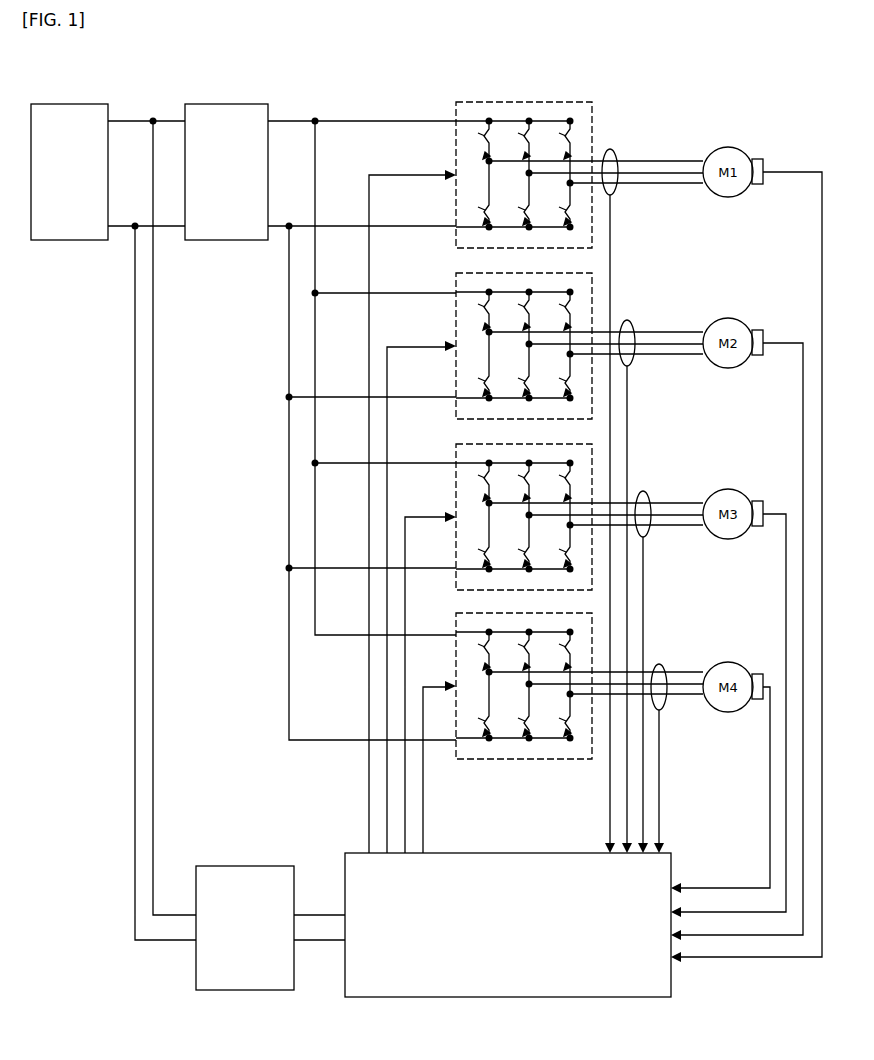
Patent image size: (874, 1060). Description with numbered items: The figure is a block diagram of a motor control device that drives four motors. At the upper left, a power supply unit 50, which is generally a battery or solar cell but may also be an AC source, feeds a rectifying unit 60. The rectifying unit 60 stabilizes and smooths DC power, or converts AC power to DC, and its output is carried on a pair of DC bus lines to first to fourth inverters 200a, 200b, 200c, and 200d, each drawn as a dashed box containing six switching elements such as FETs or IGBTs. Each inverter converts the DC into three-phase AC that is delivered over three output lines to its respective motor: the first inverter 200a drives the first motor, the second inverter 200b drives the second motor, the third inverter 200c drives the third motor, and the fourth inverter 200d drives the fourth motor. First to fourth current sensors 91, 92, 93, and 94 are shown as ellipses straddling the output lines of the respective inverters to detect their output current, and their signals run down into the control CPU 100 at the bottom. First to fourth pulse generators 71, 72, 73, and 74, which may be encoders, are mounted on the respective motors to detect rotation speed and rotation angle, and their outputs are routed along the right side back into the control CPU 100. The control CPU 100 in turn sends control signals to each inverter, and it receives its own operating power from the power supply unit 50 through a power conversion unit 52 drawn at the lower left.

The power supply unit 50 is at (69, 172).
The rectifying unit 60 is at (226, 172).
The power conversion unit 52 is at (245, 928).
The control CPU 100 is at (508, 925).
The first inverter 200a is at (510, 102).
The second inverter 200b is at (456, 273).
The third inverter 200c is at (467, 444).
The fourth inverter 200d is at (482, 613).
The first current sensor 91 is at (610, 149).
The second current sensor 92 is at (627, 320).
The third current sensor 93 is at (643, 491).
The fourth current sensor 94 is at (659, 664).
The first pulse generator 71 is at (757, 159).
The second pulse generator 72 is at (757, 330).
The third pulse generator 73 is at (757, 501).
The fourth pulse generator 74 is at (757, 674).